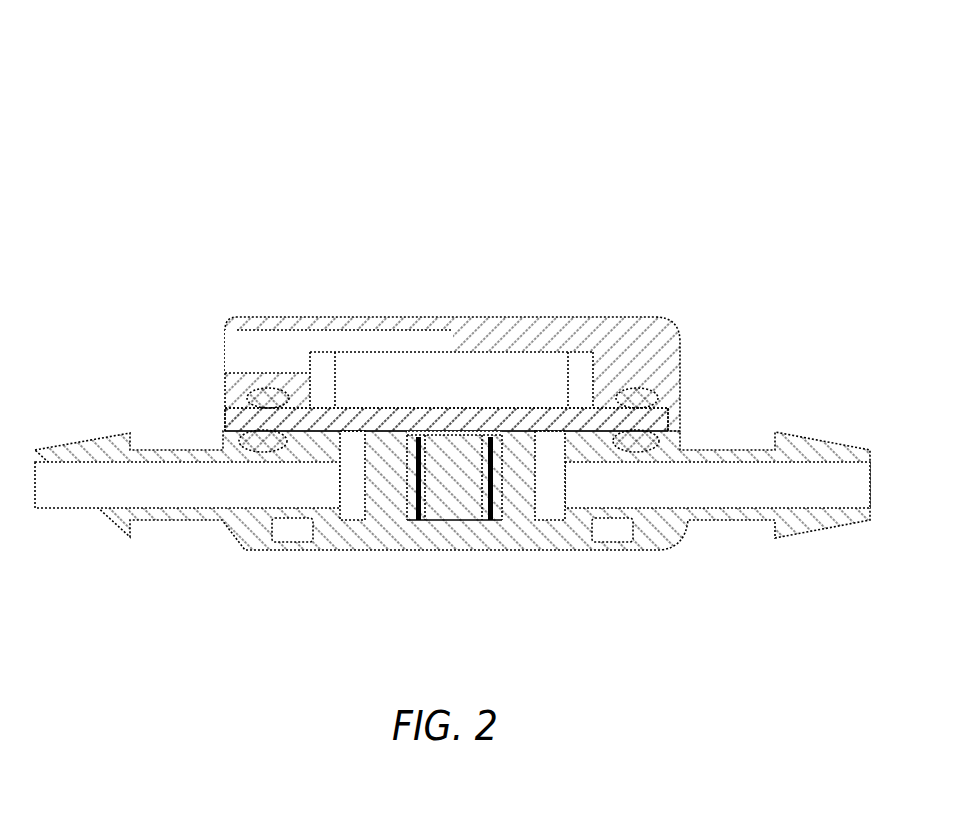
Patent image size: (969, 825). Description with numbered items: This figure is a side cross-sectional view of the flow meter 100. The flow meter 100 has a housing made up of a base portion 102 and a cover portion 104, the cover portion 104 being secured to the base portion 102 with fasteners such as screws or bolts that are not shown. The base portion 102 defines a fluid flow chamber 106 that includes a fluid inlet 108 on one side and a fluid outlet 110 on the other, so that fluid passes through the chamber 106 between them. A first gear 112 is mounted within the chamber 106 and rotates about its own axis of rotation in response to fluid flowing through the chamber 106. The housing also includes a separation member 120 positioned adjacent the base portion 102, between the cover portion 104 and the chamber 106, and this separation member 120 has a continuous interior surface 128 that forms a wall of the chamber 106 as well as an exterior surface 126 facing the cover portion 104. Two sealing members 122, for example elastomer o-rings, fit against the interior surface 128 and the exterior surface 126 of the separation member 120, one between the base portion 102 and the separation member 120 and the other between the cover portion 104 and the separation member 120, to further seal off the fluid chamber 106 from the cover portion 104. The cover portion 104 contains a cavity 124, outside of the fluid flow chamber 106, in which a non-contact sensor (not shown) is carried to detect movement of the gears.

The flow meter 100 is at (493, 135).
The base portion 102 is at (560, 548).
The cover portion 104 is at (636, 318).
The fluid flow chamber 106 is at (352, 510).
The fluid inlet 108 is at (203, 492).
The fluid outlet 110 is at (638, 483).
The first gear 112 is at (412, 520).
The separation member 120 is at (358, 418).
The sealing members 122 is at (267, 442).
The cavity 124 is at (510, 378).
The exterior surface 126 is at (440, 412).
The continuous interior surface 128 is at (508, 432).